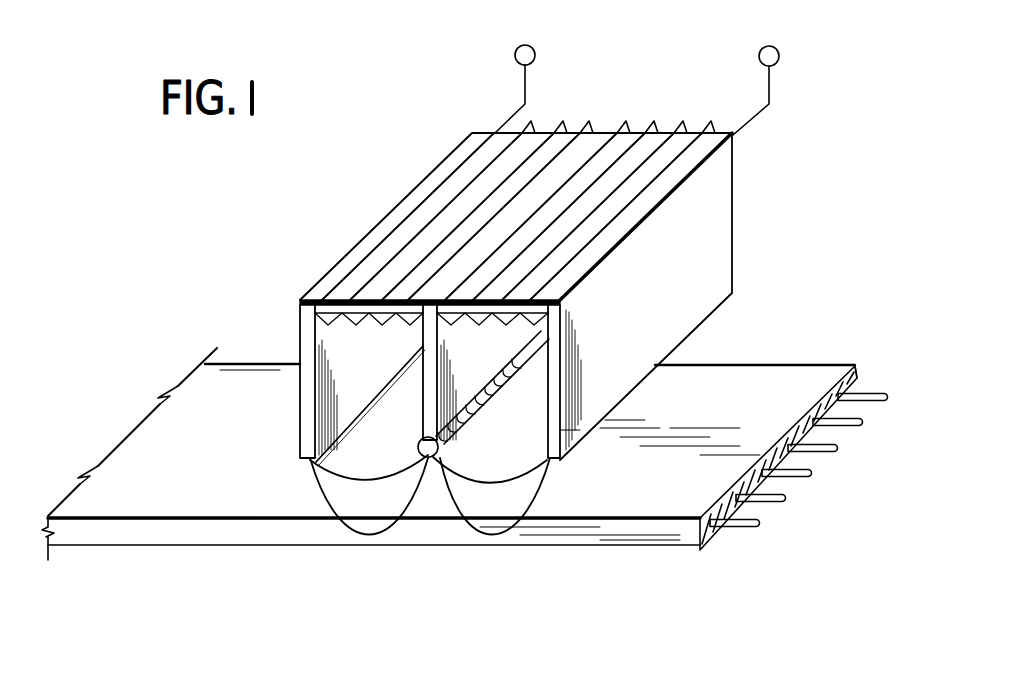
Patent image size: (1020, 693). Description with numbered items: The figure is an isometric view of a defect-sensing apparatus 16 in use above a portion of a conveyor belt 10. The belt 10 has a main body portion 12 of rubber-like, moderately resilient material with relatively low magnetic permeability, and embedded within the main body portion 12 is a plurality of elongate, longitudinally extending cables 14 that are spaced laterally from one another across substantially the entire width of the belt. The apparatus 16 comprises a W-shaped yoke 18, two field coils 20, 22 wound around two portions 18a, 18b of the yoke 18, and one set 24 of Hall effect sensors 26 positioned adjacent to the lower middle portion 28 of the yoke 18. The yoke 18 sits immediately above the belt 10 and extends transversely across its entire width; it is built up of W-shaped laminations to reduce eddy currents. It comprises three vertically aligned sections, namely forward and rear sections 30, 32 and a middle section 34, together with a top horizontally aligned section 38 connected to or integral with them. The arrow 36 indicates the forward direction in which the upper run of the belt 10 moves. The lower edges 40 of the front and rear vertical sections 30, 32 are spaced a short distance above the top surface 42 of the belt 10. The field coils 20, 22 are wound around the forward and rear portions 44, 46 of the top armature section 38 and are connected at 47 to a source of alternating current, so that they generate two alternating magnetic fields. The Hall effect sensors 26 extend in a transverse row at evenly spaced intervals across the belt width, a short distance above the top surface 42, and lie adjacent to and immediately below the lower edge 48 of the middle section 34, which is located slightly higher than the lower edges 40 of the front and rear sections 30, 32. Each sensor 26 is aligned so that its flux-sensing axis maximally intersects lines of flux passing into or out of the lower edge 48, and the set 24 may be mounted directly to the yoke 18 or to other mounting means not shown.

The conveyor belt 10 is at (815, 358).
The main body portion 12 is at (820, 375).
The cables 14 is at (862, 398).
The apparatus 16 is at (645, 95).
The yoke 18 is at (712, 228).
The first yoke portion 18a is at (385, 227).
The second yoke portion 18b is at (647, 185).
The first field coil 20 is at (412, 213).
The second field coil 22 is at (607, 205).
The set of Hall effect sensors 24 is at (545, 462).
The Hall effect sensors 26 is at (515, 400).
The lower middle portion 28 is at (400, 362).
The forward vertical section 30 is at (385, 378).
The rear vertical section 32 is at (703, 290).
The middle vertical section 34 is at (425, 346).
The arrow 36 is at (45, 422).
The top horizontal section 38 is at (588, 143).
The lower edges 40 is at (303, 455).
The top surface 42 is at (643, 475).
The forward portion 44 is at (453, 157).
The rear portion 46 is at (700, 153).
The alternating current connection 47 is at (513, 57).
The lower edge of middle section 48 is at (418, 448).